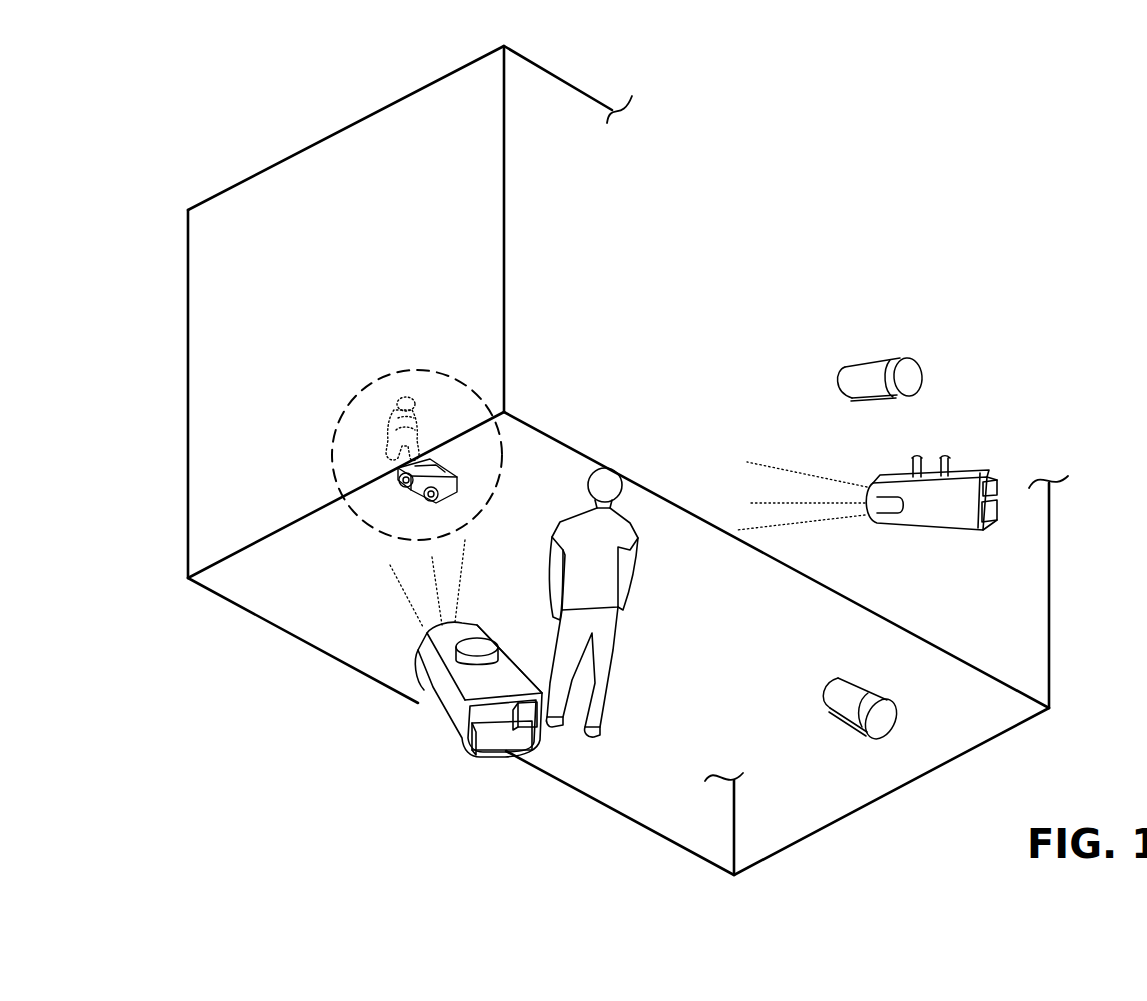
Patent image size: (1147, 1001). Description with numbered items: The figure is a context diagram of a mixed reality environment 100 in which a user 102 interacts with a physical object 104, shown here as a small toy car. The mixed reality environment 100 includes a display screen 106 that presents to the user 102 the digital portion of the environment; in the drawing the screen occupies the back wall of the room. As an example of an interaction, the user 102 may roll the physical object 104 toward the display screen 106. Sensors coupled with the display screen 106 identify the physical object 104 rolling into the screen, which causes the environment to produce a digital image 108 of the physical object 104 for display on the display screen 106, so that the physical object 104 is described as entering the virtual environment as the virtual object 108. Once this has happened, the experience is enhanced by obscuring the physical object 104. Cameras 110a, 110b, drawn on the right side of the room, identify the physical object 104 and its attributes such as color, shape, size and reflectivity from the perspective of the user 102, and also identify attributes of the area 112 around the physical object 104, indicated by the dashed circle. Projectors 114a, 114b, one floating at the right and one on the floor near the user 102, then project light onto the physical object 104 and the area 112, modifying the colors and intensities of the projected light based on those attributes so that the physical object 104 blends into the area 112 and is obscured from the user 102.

The mixed reality environment 100 is at (1000, 127).
The user 102 is at (622, 640).
The physical object 104 is at (452, 472).
The display screen 106 is at (463, 305).
The digital image 108 is at (408, 398).
The camera 110a is at (870, 370).
The camera 110b is at (843, 720).
The area around the physical object 112 is at (403, 541).
The projector 114a is at (967, 470).
The projector 114b is at (445, 722).